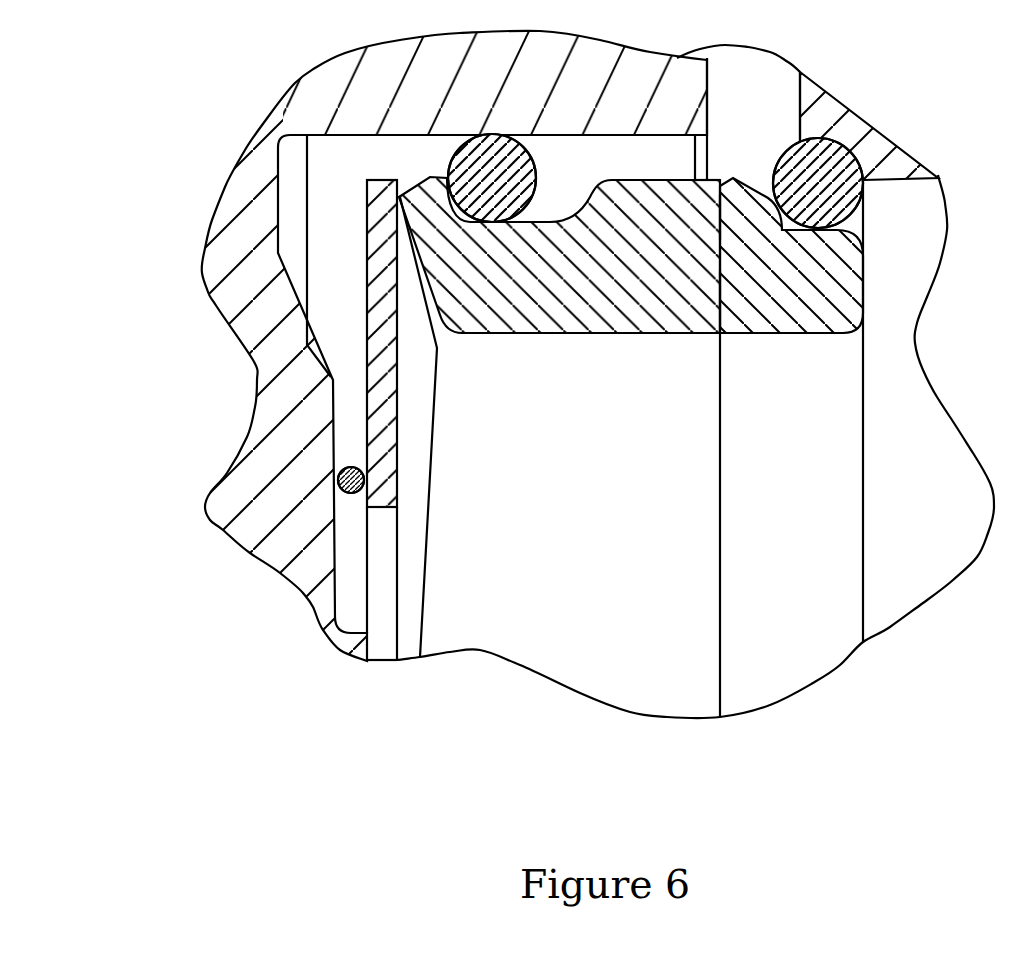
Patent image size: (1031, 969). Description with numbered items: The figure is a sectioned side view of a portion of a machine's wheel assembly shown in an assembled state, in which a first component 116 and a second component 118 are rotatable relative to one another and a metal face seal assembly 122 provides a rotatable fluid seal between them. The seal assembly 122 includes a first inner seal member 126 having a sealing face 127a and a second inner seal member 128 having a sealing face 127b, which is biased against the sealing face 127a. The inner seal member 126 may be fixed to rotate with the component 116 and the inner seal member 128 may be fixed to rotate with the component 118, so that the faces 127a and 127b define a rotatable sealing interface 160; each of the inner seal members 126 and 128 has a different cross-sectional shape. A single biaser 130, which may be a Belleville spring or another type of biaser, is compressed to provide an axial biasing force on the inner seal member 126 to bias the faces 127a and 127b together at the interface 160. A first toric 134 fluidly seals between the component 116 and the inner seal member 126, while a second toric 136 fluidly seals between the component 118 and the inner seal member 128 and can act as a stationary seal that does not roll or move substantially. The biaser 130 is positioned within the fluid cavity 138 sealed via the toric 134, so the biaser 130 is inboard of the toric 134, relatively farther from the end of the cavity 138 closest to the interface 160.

The first component 116 is at (217, 232).
The second component 118 is at (913, 160).
The metal face seal assembly 122 is at (620, 167).
The first inner seal member 126 is at (572, 318).
The sealing face 127a is at (727, 297).
The sealing face 127b is at (716, 212).
The second inner seal member 128 is at (823, 318).
The biasing member 130 is at (387, 457).
The first toric 134 is at (457, 160).
The second toric 136 is at (842, 156).
The fluid cavity 138 is at (333, 357).
The rotatable sealing interface 160 is at (720, 183).